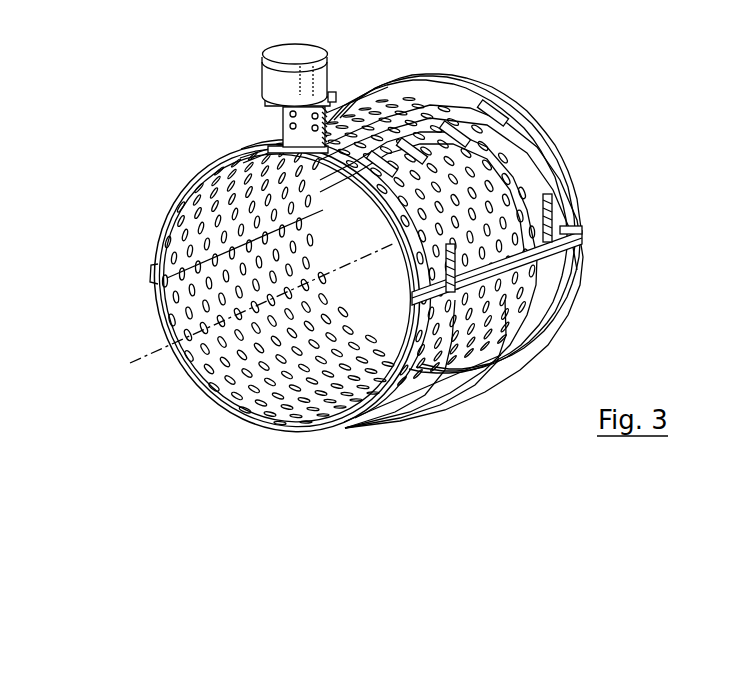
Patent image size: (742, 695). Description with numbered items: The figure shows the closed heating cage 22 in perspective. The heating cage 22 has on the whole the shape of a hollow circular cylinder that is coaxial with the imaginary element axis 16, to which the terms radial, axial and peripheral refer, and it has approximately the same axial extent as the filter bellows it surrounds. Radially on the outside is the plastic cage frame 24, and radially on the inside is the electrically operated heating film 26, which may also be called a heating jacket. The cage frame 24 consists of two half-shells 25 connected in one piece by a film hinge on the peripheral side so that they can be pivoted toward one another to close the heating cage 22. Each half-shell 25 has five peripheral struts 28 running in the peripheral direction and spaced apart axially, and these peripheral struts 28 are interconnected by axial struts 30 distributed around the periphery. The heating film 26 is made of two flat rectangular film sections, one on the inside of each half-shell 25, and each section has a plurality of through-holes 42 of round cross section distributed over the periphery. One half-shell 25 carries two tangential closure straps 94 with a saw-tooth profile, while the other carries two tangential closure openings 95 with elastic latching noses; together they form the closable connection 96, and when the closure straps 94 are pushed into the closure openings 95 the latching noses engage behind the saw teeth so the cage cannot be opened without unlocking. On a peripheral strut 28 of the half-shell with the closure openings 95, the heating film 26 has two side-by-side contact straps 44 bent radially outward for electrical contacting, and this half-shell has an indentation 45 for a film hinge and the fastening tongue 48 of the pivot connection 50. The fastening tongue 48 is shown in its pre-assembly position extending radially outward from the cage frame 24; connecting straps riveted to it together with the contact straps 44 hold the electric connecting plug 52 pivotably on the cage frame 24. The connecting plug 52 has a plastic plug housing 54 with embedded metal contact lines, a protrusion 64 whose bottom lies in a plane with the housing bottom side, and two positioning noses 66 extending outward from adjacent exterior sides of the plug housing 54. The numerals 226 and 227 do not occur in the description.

The element axis 16 is at (160, 352).
The heating cage 22 is at (130, 118).
The cage frame 24 is at (568, 305).
The half-shells 25 is at (495, 92).
The heating film 26 is at (233, 390).
The peripheral struts 28 is at (563, 175).
The axial struts 30 is at (497, 115).
The through-holes 42 is at (316, 257).
The contact straps 44 is at (276, 140).
The indentation 45 is at (262, 157).
The fastening tongue 48 is at (340, 124).
The pivot connection 50 is at (276, 131).
The connecting plug 52 is at (257, 62).
The plug housing 54 is at (275, 80).
The protrusion 64 is at (268, 98).
The positioning noses 66 is at (334, 97).
The closure straps 94 is at (552, 210).
The closure openings 95 is at (565, 244).
The closable connection 96 is at (562, 231).
The ring 226 is at (530, 160).
The tab 227 is at (153, 266).